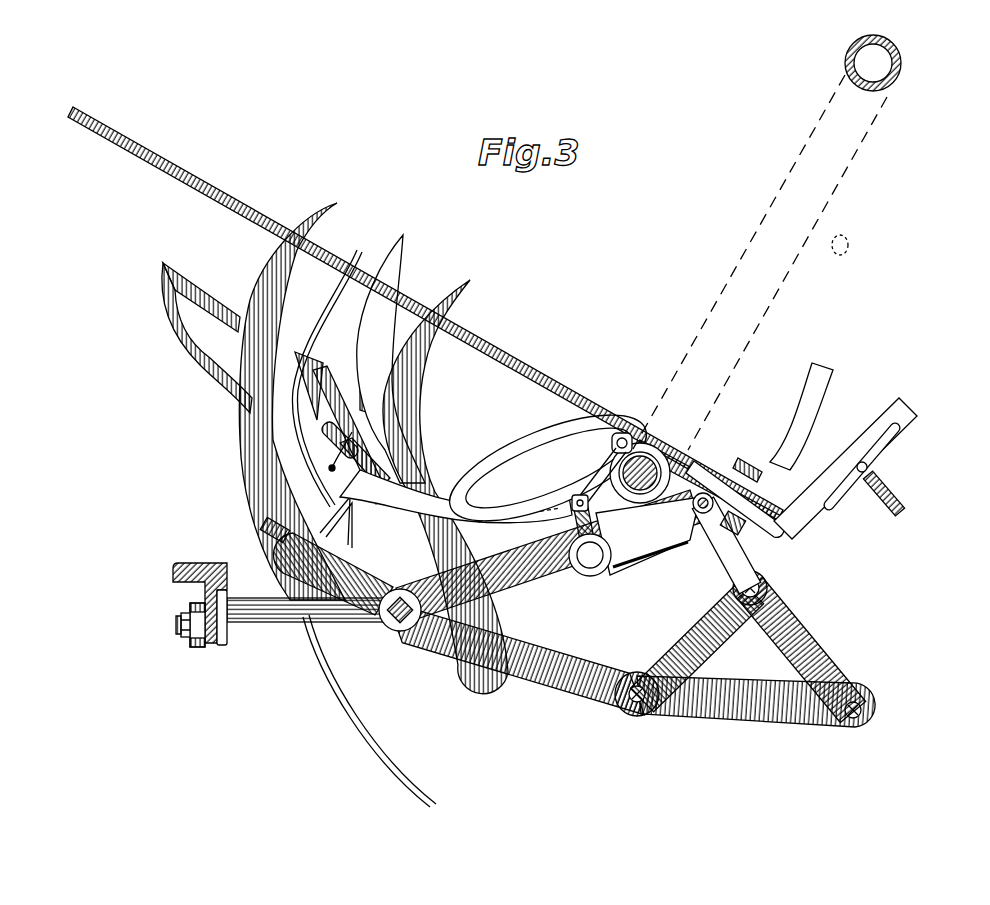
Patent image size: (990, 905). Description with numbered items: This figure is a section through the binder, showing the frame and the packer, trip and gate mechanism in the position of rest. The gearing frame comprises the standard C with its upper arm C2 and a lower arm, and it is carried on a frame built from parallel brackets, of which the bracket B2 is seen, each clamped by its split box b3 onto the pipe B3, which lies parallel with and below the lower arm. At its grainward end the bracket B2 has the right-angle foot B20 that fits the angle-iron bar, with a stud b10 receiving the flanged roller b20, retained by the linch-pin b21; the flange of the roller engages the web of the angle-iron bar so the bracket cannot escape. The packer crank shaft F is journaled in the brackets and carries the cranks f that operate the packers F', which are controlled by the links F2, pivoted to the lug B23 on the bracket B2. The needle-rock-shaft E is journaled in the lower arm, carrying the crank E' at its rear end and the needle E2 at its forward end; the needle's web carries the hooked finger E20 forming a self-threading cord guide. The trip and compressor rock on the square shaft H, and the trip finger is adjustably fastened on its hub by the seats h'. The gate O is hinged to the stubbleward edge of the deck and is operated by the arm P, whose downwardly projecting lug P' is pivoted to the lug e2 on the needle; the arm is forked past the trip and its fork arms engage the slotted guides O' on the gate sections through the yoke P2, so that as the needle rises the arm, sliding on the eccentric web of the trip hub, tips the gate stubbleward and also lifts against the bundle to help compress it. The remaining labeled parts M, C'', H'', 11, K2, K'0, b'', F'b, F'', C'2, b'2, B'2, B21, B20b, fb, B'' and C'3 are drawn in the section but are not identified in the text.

The bar M is at (490, 350).
The upper arm C2 is at (893, 77).
The standard C is at (821, 245).
The arm C'' is at (740, 459).
The downwardly projecting lug P' is at (619, 404).
The needle-rock-shaft E is at (696, 458).
The block H'' is at (746, 443).
The trip and compressor shaft H is at (707, 470).
The pin 11 is at (698, 495).
The curved arm K2 is at (800, 413).
The arm P is at (755, 482).
The gate O is at (851, 455).
The slotted guide O' is at (893, 466).
The yoke P2 is at (867, 470).
The lever end K'0 is at (812, 556).
The block b'' is at (770, 553).
The links F2 is at (803, 637).
The packers F' is at (253, 401).
The lower links F'b is at (631, 675).
The curved band F'' is at (445, 487).
The needle E2 is at (457, 497).
The lug on the needle e2 is at (613, 460).
The link C'2 is at (577, 475).
The pivot b'2 is at (552, 522).
The dashed arm B'2 is at (519, 519).
The arm B21 is at (456, 496).
The crank E' is at (327, 378).
The finger E20 is at (337, 468).
The right-angle foot B20 is at (260, 560).
The plate B20b is at (223, 643).
The seats h' is at (200, 586).
The linch-pin b21 is at (187, 613).
The stud b10 is at (190, 625).
The flanged roller b20 is at (197, 650).
The crank f is at (317, 575).
The band end fb is at (480, 670).
The packer crank shaft F is at (391, 638).
The bracket B2 is at (535, 560).
The pipe B3 is at (598, 580).
The split box b3 is at (607, 573).
The link B'' is at (714, 545).
The lug B23 is at (682, 627).
The plate C'3 is at (648, 536).